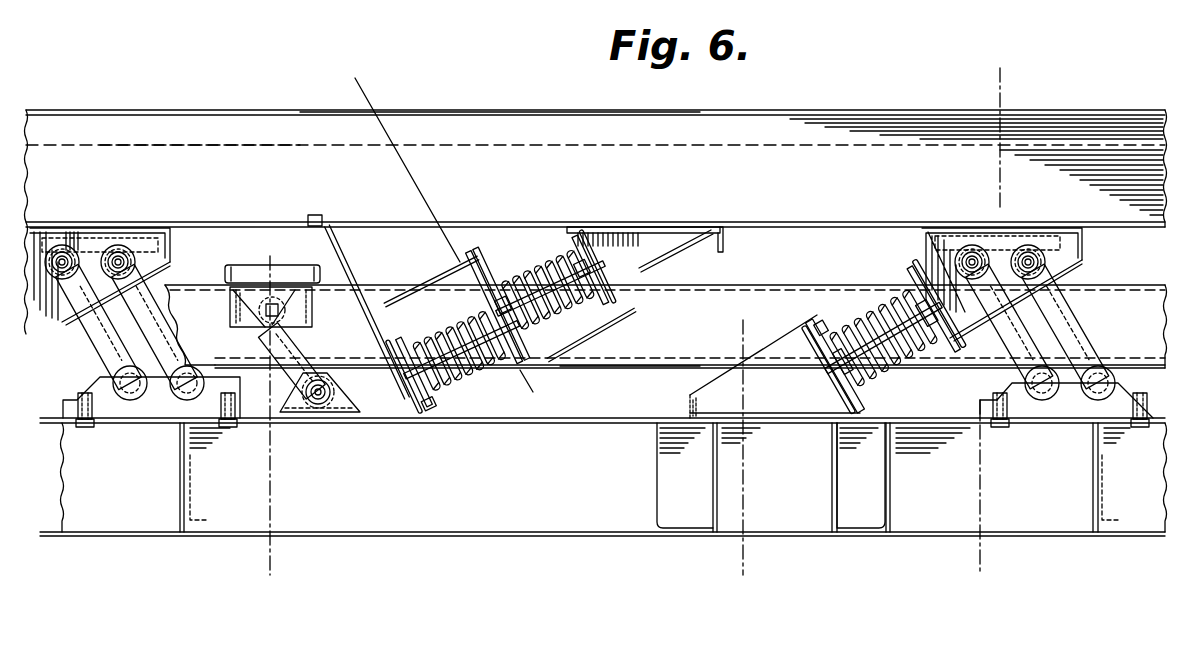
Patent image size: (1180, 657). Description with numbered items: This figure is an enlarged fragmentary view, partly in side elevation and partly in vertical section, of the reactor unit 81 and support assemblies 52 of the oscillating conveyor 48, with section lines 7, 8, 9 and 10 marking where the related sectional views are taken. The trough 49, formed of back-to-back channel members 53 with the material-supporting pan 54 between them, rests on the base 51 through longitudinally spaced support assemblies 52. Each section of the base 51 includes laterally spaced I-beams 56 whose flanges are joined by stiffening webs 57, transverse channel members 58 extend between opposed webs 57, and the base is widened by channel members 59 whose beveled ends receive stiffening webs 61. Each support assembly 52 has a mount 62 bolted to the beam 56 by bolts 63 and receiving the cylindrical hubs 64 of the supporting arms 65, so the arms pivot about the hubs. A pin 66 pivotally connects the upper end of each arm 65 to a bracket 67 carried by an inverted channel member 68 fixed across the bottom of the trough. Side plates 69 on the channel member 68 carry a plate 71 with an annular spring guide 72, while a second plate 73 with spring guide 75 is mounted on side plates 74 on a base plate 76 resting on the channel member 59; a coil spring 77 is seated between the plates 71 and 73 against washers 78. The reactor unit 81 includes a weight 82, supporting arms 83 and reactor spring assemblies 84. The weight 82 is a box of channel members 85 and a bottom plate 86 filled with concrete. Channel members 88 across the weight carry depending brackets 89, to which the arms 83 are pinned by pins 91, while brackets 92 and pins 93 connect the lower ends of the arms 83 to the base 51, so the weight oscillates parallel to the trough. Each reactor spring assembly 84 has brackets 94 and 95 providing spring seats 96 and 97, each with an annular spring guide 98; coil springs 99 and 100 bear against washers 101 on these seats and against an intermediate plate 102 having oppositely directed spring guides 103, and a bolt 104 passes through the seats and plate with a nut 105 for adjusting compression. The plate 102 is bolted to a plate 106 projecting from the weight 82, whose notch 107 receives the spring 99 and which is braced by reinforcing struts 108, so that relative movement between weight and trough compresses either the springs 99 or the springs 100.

The section line 7- 7 is at (970, 82).
The section line 8- 8 is at (250, 252).
The section line 9- 9 is at (332, 96).
The section line 10- 10 is at (720, 333).
The oscillating conveyor 48 is at (862, 110).
The trough 49 is at (706, 136).
The base 51 is at (541, 537).
The support assemblies 52 is at (62, 322).
The channel members 53 is at (520, 130).
The pan 54 is at (187, 143).
The I-beams 56 is at (158, 516).
The stiffening webs 57 is at (180, 470).
The channel members 58 is at (196, 480).
The channel members 59 is at (664, 462).
The stiffening webs 61 is at (713, 490).
The mount 62 is at (118, 430).
The bolts 63 is at (78, 397).
The cylindrical hubs 64 is at (150, 395).
The supporting arms 65 is at (156, 290).
The pin 66 is at (62, 262).
The bracket 67 is at (143, 228).
The inverted channel member 68 is at (188, 228).
The side plates 69 is at (79, 235).
The plate 71 is at (905, 263).
The annular spring guide 72 is at (935, 316).
The second plate 73 is at (822, 322).
The side plates 74 is at (790, 406).
The annular spring guide 75 is at (843, 378).
The base plate 76 is at (765, 418).
The coil spring 77 is at (884, 372).
The washers 78 is at (857, 330).
The reactor unit 81 is at (641, 369).
The weight 82 is at (746, 299).
The supporting arms 83 is at (313, 347).
The reactor spring assemblies 84 is at (536, 262).
The channel members 85 is at (690, 284).
The bottom plate 86 is at (681, 368).
The channel members 88 is at (291, 268).
The depending brackets 89 is at (312, 300).
The pins 91 is at (262, 322).
The brackets 92 is at (345, 413).
The pins 93 is at (331, 390).
The bracket 94 is at (637, 236).
The bracket 95 is at (351, 262).
The spring seat 96 is at (614, 287).
The spring seat 97 is at (426, 410).
The annular spring guide 98 is at (410, 378).
The coil spring 99 is at (548, 327).
The coil spring 100 is at (458, 378).
The washers 101 is at (396, 336).
The plate 102 is at (470, 292).
The annular spring guides 103 is at (485, 362).
The bolt 104 is at (446, 386).
The nut 105 is at (626, 272).
The plate 106 is at (482, 257).
The notch 107 is at (503, 278).
The reinforcing struts 108 is at (441, 276).